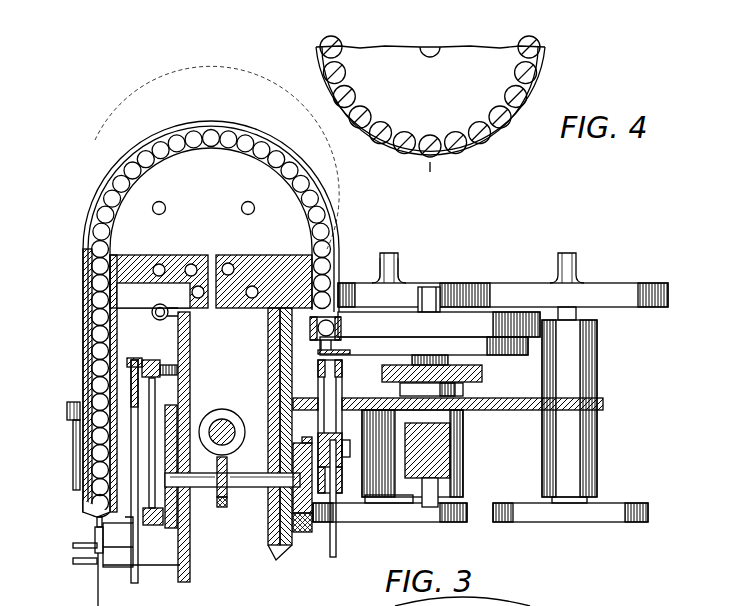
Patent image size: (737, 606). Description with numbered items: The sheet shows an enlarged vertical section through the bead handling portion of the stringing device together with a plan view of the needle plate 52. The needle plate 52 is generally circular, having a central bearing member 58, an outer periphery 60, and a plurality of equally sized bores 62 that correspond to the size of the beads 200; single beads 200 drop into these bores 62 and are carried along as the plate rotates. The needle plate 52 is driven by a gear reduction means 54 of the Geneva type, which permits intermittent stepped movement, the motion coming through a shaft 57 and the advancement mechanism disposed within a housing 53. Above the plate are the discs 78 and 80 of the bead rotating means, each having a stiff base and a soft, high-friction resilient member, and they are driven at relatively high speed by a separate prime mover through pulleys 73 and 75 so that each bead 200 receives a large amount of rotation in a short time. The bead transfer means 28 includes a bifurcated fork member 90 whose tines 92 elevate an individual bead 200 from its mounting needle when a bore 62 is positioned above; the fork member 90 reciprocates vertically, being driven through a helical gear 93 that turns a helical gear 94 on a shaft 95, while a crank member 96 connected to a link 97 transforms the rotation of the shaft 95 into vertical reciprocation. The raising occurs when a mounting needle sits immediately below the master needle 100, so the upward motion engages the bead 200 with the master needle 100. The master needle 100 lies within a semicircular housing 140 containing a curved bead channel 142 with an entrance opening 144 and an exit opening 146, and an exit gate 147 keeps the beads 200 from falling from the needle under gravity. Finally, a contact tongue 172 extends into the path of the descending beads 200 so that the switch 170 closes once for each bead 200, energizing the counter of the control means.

In FIG. 3, the beads 200 is at (148, 135).
In FIG. 3, the curved bead channel 142 is at (250, 142).
In FIG. 3, the semicircular housing 140 is at (337, 222).
In FIG. 3, the entrance opening 144 is at (340, 292).
In FIG. 3, the disc 80 is at (428, 287).
In FIG. 3, the needle plate 52 is at (510, 312).
In FIG. 4, the needle plate 52 is at (490, 52).
In FIG. 3, the disc 78 is at (608, 284).
In FIG. 3, the gear reduction means 54 is at (484, 374).
In FIG. 3, the housing 53 is at (466, 462).
In FIG. 3, the shaft 57 is at (228, 420).
In FIG. 3, the helical gear 93 is at (240, 438).
In FIG. 3, the tines 92 is at (322, 395).
In FIG. 3, the bifurcated fork member 90 is at (340, 442).
In FIG. 3, the helical gear 94 is at (222, 508).
In FIG. 3, the shaft 95 is at (250, 490).
In FIG. 3, the crank member 96 is at (298, 535).
In FIG. 3, the link 97 is at (308, 530).
In FIG. 3, the bead transfer means 28 is at (330, 556).
In FIG. 3, the pulley 75 is at (376, 523).
In FIG. 3, the pulley 73 is at (527, 523).
In FIG. 3, the switch 170 is at (67, 425).
In FIG. 3, the contact tongue 172 is at (78, 494).
In FIG. 3, the exit gate 147 is at (92, 509).
In FIG. 3, the exit opening 146 is at (95, 520).
In FIG. 3, the master needle 100 is at (96, 592).
In FIG. 4, the central bearing member 58 is at (434, 47).
In FIG. 4, the bores 62 is at (380, 140).
In FIG. 4, the outer periphery 60 is at (429, 175).